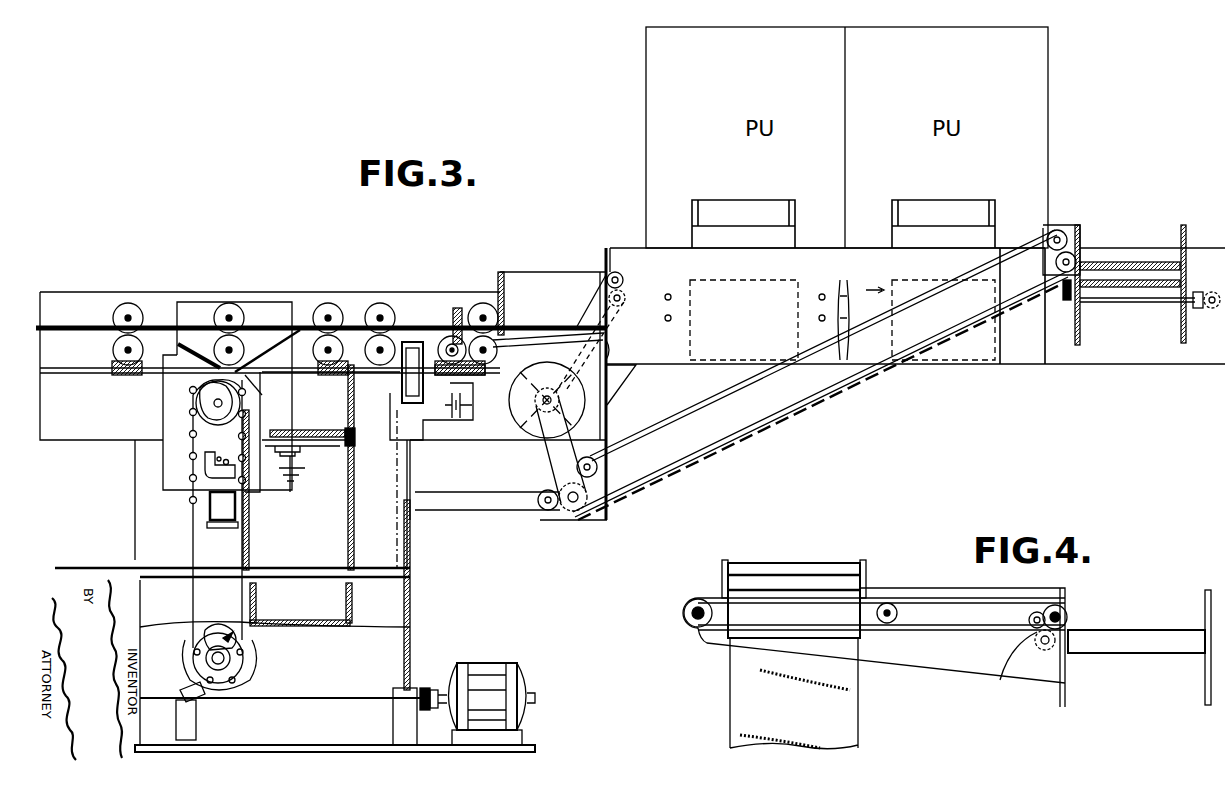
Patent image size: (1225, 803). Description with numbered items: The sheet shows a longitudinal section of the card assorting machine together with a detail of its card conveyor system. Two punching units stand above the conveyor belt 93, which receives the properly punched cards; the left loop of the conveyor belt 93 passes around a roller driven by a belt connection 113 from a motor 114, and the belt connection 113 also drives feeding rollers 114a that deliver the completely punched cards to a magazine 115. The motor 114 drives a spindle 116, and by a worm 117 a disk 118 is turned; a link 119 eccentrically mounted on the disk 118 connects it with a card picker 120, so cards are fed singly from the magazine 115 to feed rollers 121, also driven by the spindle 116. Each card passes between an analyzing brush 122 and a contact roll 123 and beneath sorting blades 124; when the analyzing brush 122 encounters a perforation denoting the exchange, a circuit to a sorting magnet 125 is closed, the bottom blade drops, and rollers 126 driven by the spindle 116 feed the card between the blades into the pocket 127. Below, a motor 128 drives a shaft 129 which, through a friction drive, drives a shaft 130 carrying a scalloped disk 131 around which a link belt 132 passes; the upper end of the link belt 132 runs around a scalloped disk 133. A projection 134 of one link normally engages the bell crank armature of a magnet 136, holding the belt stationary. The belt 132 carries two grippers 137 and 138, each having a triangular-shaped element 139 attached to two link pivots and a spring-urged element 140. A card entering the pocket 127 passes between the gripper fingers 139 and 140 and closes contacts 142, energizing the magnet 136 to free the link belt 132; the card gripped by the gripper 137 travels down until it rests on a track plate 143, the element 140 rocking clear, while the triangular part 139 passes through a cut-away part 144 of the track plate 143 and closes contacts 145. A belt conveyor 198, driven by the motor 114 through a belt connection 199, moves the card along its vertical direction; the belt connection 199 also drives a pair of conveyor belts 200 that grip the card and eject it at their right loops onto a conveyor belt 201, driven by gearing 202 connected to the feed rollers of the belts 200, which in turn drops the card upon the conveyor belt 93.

In FIG. 3, the conveyor belt 93 is at (843, 282).
In FIG. 4, the conveyor belt 93 is at (1121, 636).
In FIG. 3, the belt connection 113 is at (622, 322).
In FIG. 3, the motor 114 is at (586, 401).
In FIG. 3, the feeding rollers 114a is at (622, 275).
In FIG. 3, the magazine 115 is at (580, 280).
In FIG. 3, the spindle 116 is at (618, 378).
In FIG. 3, the worm 117 is at (478, 375).
In FIG. 3, the disk 118 is at (490, 356).
In FIG. 3, the link 119 is at (552, 348).
In FIG. 3, the card picker 120 is at (612, 345).
In FIG. 3, the feed rollers 121 is at (504, 312).
In FIG. 3, the analyzing brush 122 is at (448, 337).
In FIG. 3, the contact roll 123 is at (462, 305).
In FIG. 3, the sorting blades 124 is at (440, 322).
In FIG. 3, the sorting magnet 125 is at (402, 388).
In FIG. 3, the rollers 126 is at (375, 303).
In FIG. 3, the pocket 127 is at (232, 592).
In FIG. 3, the motor 128 is at (488, 668).
In FIG. 3, the shaft 129 is at (330, 694).
In FIG. 3, the shaft 130 is at (226, 660).
In FIG. 3, the scalloped disk 131 is at (205, 640).
In FIG. 3, the link belt 132 is at (190, 490).
In FIG. 3, the scalloped disk 133 is at (205, 410).
In FIG. 3, the projection 134 is at (205, 468).
In FIG. 3, the magnet 136 is at (236, 513).
In FIG. 3, the gripper 137 is at (268, 392).
In FIG. 3, the gripper 138 is at (185, 686).
In FIG. 3, the triangular-shaped element 139 is at (250, 370).
In FIG. 3, the element 140 is at (236, 355).
In FIG. 3, the contacts 142 is at (210, 345).
In FIG. 3, the track plate 143 is at (312, 430).
In FIG. 3, the cut-away part 144 is at (268, 440).
In FIG. 3, the contacts 145 is at (283, 448).
In FIG. 3, the belt conveyor 198 is at (492, 492).
In FIG. 3, the belt connection 199 is at (580, 424).
In FIG. 3, the conveyor belts 200 is at (728, 388).
In FIG. 4, the conveyor belts 200 is at (864, 588).
In FIG. 3, the conveyor belt 201 is at (1138, 264).
In FIG. 4, the conveyor belt 201 is at (927, 630).
In FIG. 3, the gearing 202 is at (1060, 288).